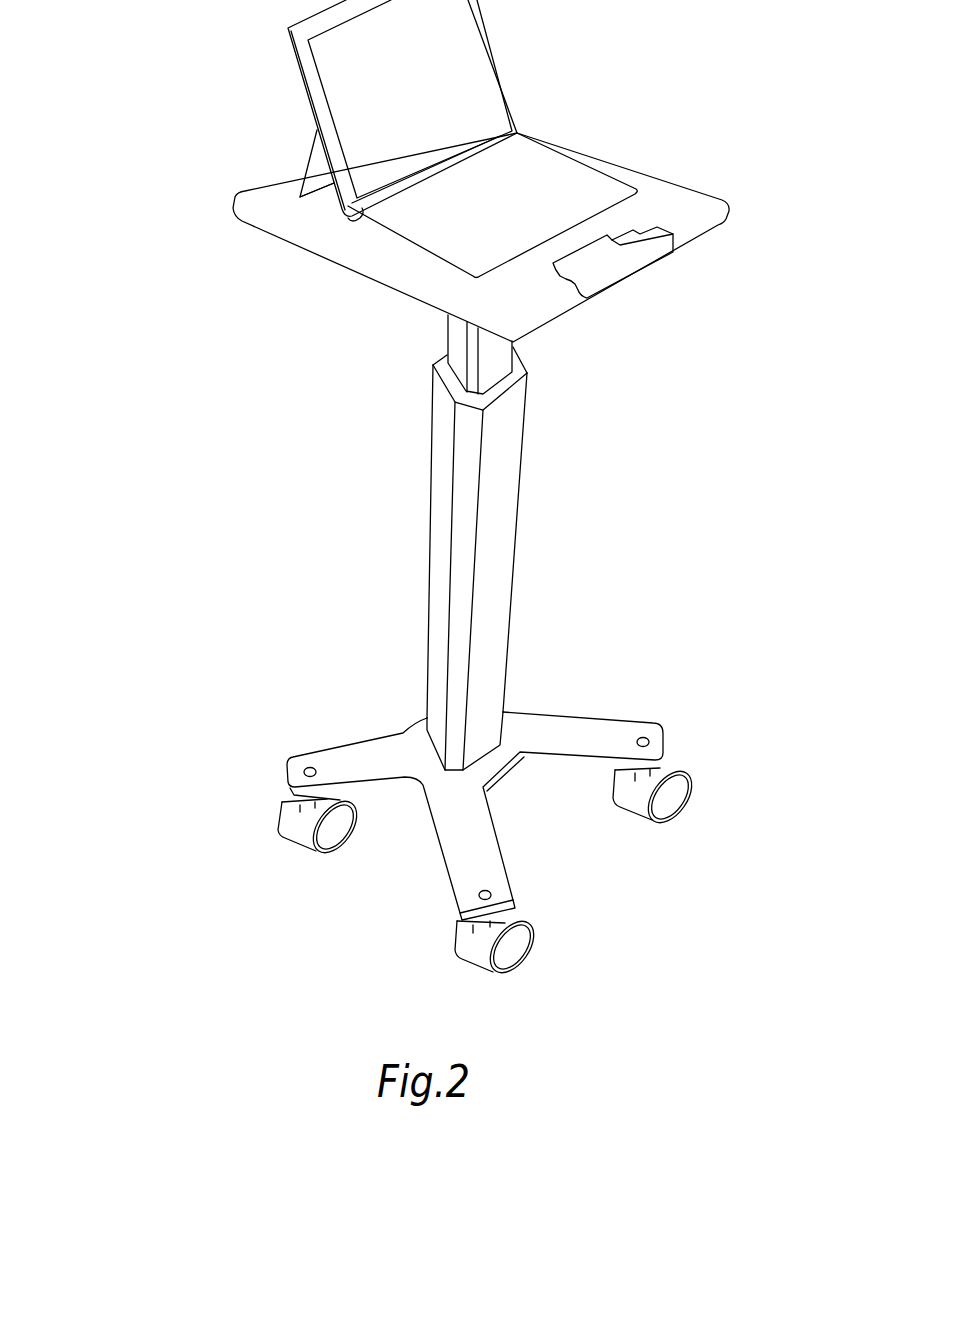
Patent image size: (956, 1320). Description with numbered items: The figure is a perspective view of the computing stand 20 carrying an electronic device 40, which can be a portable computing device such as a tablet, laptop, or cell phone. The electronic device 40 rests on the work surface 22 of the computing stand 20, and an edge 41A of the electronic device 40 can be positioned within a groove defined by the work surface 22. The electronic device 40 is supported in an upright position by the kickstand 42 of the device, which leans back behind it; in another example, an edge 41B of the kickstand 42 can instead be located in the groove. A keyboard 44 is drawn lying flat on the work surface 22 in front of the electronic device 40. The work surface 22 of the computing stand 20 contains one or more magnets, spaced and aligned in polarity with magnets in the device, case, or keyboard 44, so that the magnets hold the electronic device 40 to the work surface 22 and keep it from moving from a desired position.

The computing stand 20 is at (215, 560).
The work surface 22 is at (386, 282).
The electronic device 40 is at (462, 65).
The edge of the electronic device 41A is at (345, 222).
The edge of the kickstand 41B is at (303, 170).
The kickstand 42 is at (310, 150).
The keyboard 44 is at (572, 178).